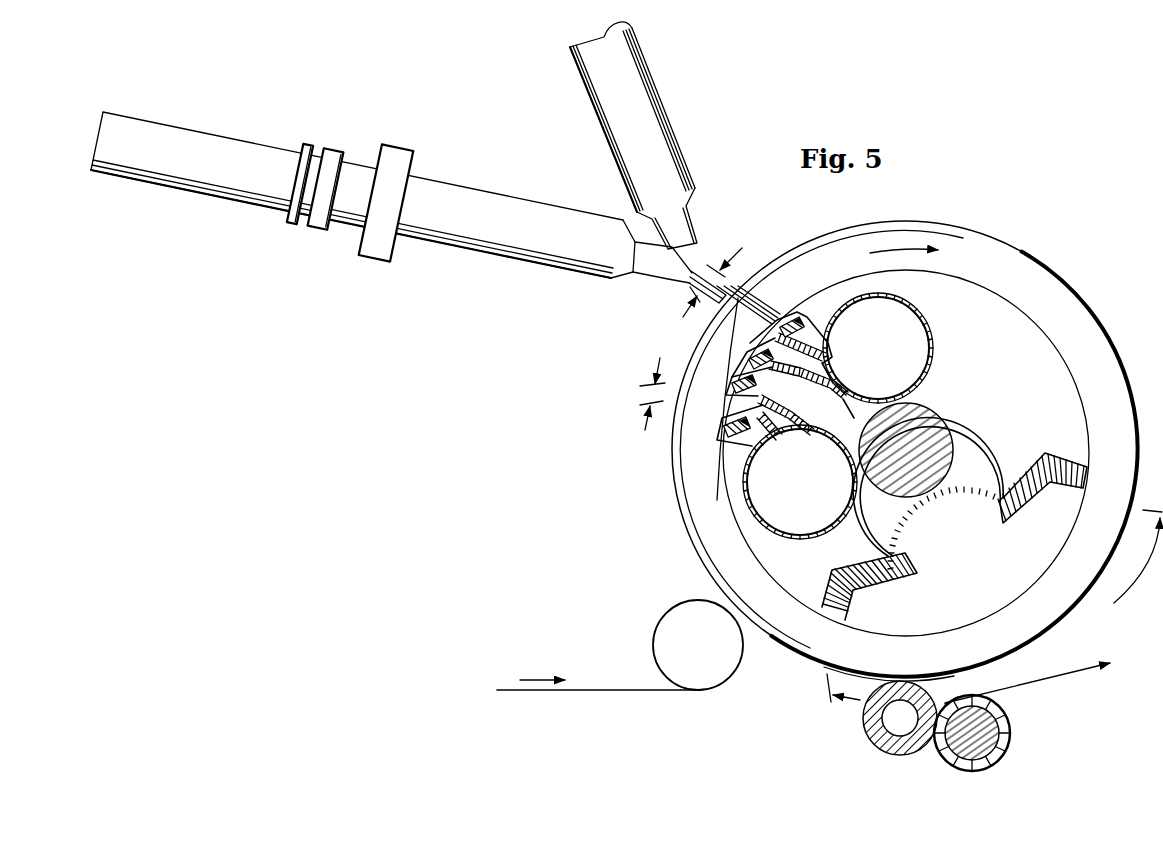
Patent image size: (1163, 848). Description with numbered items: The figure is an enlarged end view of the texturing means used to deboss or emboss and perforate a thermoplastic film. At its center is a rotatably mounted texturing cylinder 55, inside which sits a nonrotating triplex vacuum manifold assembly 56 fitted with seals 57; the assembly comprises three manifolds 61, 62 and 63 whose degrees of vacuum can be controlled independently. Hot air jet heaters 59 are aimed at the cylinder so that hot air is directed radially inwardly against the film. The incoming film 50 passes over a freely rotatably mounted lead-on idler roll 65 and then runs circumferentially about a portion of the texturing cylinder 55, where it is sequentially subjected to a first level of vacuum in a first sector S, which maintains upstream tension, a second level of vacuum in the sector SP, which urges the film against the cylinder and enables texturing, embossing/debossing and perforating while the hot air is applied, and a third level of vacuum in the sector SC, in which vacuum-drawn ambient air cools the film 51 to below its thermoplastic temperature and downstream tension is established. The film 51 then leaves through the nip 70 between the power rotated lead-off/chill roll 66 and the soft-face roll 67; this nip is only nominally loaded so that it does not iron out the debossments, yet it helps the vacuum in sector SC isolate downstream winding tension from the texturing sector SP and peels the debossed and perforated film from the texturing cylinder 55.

The film 50 is at (585, 690).
The film 51 is at (1050, 680).
The texturing cylinder 55 is at (1101, 354).
The triplex vacuum manifold assembly 56 is at (958, 414).
The seals 57 is at (779, 317).
The hot air jet heaters 59 is at (501, 229).
The manifold 61 is at (836, 529).
The manifold 62 is at (935, 345).
The manifold 63 is at (993, 526).
The lead-on idler roll 65 is at (708, 645).
The lead-off/chill roll 66 is at (865, 727).
The soft-face roll 67 is at (1012, 733).
The nip 70 is at (946, 704).
The second sector SP is at (723, 273).
The spacing S is at (646, 394).
The third sector SC is at (1124, 569).